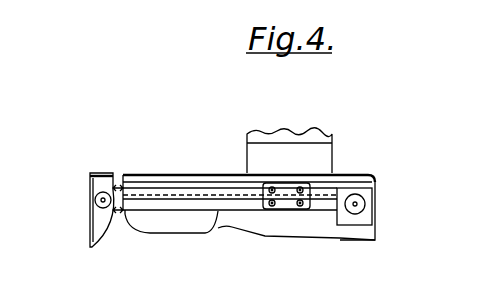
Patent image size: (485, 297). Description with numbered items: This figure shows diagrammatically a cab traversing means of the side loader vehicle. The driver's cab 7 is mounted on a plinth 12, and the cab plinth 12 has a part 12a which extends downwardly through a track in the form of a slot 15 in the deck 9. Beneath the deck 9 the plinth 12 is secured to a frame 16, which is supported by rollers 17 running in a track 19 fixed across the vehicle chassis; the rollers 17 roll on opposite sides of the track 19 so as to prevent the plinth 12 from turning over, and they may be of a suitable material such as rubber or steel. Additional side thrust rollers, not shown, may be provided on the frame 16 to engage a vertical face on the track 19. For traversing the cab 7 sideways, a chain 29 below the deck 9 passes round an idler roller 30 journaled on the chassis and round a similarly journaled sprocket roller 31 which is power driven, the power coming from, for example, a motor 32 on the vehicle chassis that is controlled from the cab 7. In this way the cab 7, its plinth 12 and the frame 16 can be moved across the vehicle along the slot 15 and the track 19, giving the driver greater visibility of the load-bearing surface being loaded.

The driver's cab 7 is at (334, 136).
The deck 9 is at (198, 174).
The plinth 12 is at (322, 158).
The part of the cab plinth 12a is at (295, 180).
The slot 15 is at (167, 174).
The frame 16 is at (312, 177).
The rollers 17 is at (290, 209).
The track 19 is at (214, 214).
The chain 29 is at (168, 212).
The idler roller 30 is at (95, 201).
The sprocket roller 31 is at (366, 204).
The motor 32 is at (373, 220).